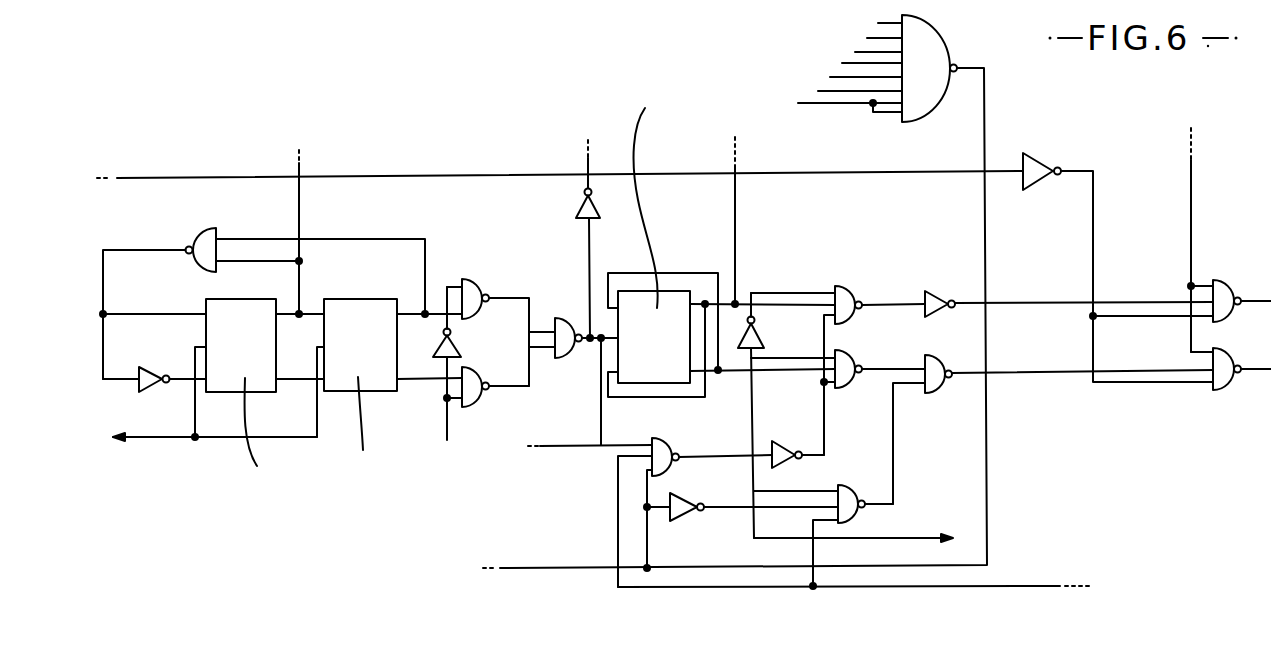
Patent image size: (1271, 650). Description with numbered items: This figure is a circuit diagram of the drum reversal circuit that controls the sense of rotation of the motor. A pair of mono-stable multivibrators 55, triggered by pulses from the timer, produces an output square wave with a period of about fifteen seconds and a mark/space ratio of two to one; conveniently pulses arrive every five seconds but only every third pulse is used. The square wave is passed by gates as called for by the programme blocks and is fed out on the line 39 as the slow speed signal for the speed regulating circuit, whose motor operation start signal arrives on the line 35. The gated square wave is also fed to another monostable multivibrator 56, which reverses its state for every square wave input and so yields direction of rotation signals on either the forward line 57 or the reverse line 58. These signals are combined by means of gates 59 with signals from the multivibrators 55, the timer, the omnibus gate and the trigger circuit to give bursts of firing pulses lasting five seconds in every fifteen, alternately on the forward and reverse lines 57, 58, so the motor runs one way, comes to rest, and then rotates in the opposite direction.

The mono-stable multivibrators 55 is at (259, 362).
The monostable multivibrator 56 is at (672, 353).
The line 39 is at (601, 408).
The reverse line 58 is at (976, 266).
The forward line 57 is at (978, 346).
The gates 59 is at (927, 357).
The line 35 is at (987, 520).